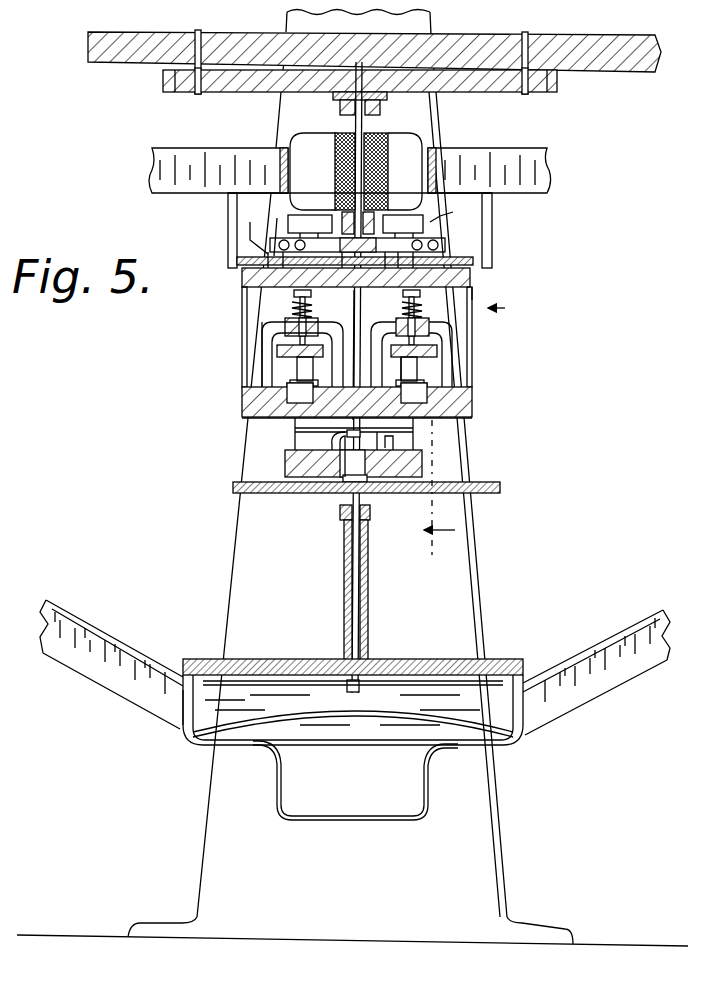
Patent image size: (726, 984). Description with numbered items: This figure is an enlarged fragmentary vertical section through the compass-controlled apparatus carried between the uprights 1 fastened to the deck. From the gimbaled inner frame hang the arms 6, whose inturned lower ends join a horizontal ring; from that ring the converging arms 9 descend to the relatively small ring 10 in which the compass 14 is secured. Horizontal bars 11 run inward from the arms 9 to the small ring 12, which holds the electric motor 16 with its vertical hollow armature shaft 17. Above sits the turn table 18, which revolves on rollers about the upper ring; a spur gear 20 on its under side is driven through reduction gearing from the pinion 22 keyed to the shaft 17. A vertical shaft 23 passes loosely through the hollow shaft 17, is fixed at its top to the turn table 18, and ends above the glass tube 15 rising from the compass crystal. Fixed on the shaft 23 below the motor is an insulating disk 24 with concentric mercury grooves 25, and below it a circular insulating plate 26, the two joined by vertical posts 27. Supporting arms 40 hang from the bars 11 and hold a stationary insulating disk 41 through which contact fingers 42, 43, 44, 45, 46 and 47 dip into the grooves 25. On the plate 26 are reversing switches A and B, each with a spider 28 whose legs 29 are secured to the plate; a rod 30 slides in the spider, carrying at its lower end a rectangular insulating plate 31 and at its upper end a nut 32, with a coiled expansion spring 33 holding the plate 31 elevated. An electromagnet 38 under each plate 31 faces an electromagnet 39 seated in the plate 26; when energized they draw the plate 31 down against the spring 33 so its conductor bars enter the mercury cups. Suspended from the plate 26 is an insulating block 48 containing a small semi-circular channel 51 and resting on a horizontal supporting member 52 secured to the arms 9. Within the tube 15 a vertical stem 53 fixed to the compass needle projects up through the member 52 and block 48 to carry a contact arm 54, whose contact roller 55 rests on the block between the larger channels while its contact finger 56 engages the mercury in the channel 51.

The upright 1 is at (457, 612).
The depending arm 6 is at (472, 434).
The converging arm 9 is at (622, 648).
The small ring 10 is at (527, 736).
The horizontal bar 11 is at (490, 170).
The small ring 12 is at (288, 172).
The compass 14 is at (487, 712).
The vertical glass tube 15 is at (363, 618).
The electric motor 16 is at (403, 153).
The hollow armature shaft 17 is at (367, 139).
The turn table 18 is at (600, 58).
The spur gear 20 is at (542, 93).
The pinion 22 is at (343, 104).
The vertical shaft 23 is at (356, 323).
The insulating disk 24 is at (480, 278).
The groove 25 is at (287, 289).
The circular insulating plate 26 is at (474, 412).
The vertical post 27 is at (473, 300).
The spider 28 is at (321, 326).
The depending leg 29 is at (298, 370).
The vertical rod 30 is at (277, 350).
The rectangular insulating plate 31 is at (258, 420).
The nut 32 is at (262, 325).
The coiled expansion spring 33 is at (308, 309).
The electromagnet 38 is at (287, 395).
The electromagnet 39 is at (430, 395).
The supporting arm 40 is at (230, 227).
The insulating disk 41 is at (470, 260).
The contact finger 42 is at (253, 226).
The contact finger 43 is at (284, 224).
The contact finger 44 is at (310, 226).
The contact finger 45 is at (403, 226).
The contact finger 46 is at (454, 206).
The contact finger 47 is at (440, 244).
The insulating block 48 is at (283, 478).
The semi-circular channel 51 is at (333, 478).
The horizontal supporting member 52 is at (477, 484).
The vertical stem 53 is at (366, 585).
The contact arm 54 is at (296, 429).
The contact roller 55 is at (381, 441).
The contact finger 56 is at (335, 438).
The reversing switch A is at (264, 355).
The reversing switch B is at (452, 340).